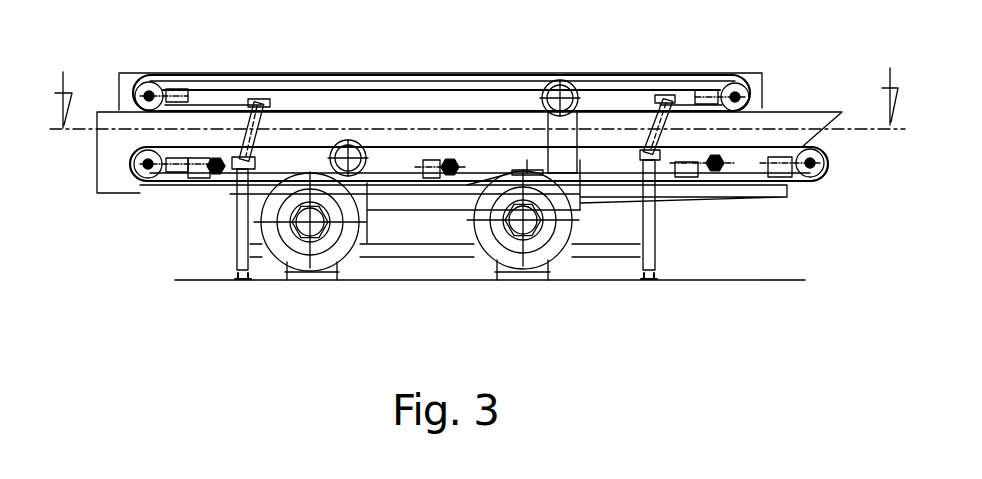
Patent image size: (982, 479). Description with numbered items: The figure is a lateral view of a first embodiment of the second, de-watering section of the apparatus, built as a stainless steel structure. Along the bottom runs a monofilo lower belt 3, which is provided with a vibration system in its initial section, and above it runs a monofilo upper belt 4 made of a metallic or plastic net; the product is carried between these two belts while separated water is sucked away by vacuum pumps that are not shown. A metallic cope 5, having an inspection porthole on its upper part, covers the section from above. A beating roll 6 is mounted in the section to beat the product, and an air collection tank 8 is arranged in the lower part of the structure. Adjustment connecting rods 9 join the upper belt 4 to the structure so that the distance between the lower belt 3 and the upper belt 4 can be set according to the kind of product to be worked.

The monofilo lower belt 3 is at (143, 181).
The monofilo upper belt 4 is at (147, 95).
The metallic cope 5 is at (233, 73).
The beating roll 6 is at (287, 256).
The air collection tank 8 is at (708, 196).
The adjustment connecting rod 9 is at (285, 108).